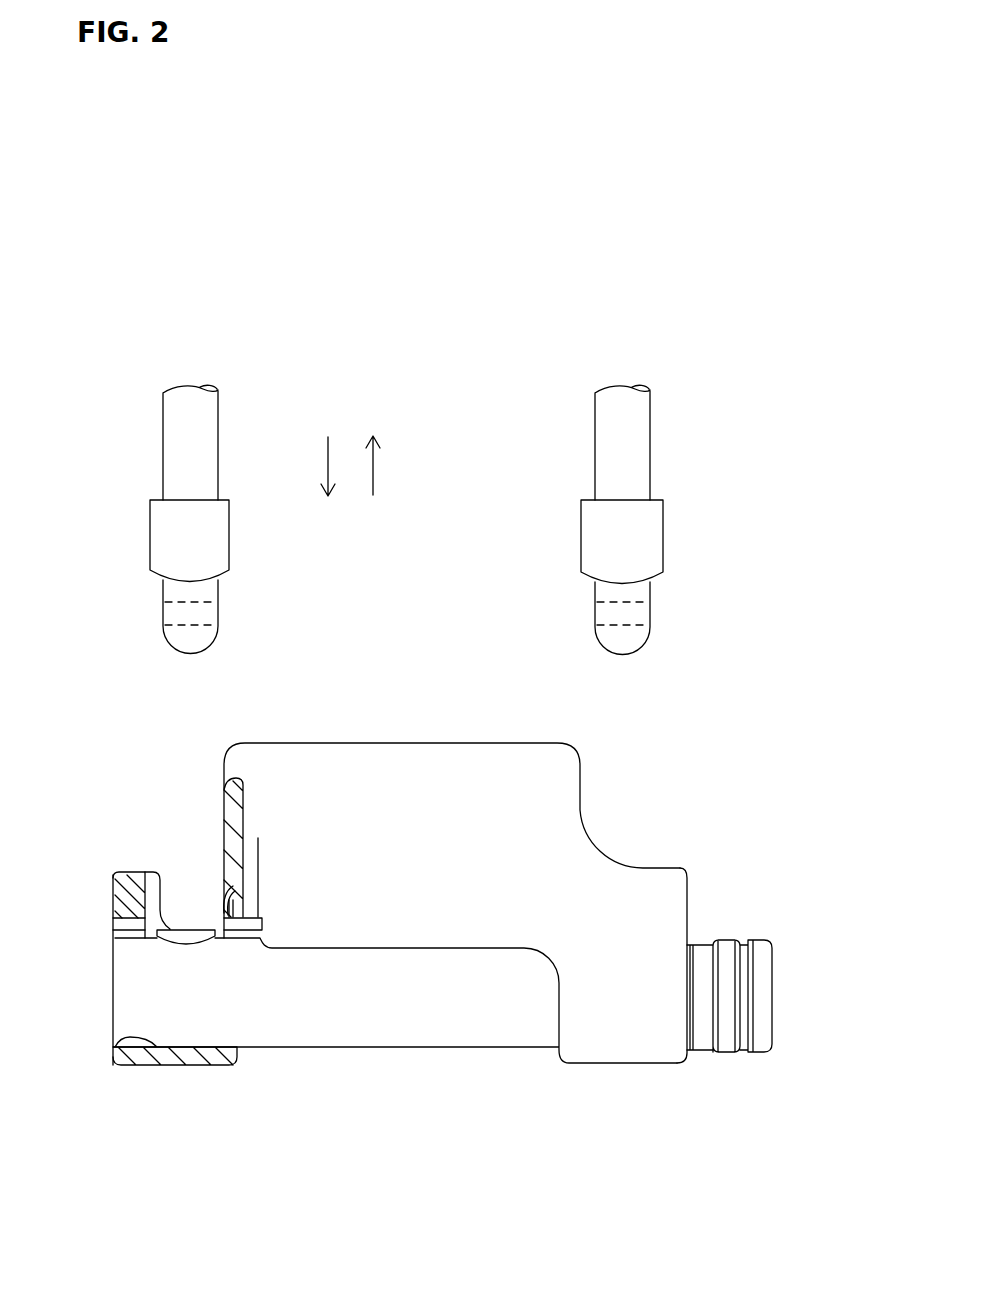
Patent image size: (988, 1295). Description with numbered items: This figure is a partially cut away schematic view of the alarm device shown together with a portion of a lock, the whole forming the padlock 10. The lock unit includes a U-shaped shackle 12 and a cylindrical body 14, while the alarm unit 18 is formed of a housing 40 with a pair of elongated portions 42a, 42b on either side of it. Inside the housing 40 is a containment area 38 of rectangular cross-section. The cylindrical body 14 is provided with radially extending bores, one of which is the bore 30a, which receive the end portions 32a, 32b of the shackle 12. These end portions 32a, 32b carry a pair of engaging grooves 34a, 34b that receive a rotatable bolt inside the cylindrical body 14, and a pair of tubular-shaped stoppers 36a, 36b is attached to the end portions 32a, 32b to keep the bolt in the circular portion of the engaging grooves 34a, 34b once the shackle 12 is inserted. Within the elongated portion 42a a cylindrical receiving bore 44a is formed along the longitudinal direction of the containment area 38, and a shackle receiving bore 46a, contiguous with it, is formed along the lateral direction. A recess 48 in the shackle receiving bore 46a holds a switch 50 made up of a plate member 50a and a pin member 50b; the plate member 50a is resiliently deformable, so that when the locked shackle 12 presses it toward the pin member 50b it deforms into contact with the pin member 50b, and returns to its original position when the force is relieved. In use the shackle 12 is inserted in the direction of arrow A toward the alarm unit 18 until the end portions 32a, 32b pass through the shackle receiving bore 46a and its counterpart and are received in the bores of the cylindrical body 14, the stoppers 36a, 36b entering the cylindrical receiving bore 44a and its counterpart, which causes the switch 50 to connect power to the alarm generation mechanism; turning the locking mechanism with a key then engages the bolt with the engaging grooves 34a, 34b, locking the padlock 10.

The padlock 10 is at (674, 185).
The shackle 12 is at (659, 438).
The cylindrical body 14 is at (503, 1058).
The alarm unit 18 is at (433, 738).
The bore 30a is at (115, 900).
The end portion 32a is at (162, 595).
The end portion 32b is at (650, 595).
The engaging groove 34a is at (180, 623).
The engaging groove 34b is at (628, 620).
The stopper 36a is at (150, 540).
The stopper 36b is at (663, 541).
The containment area 38 is at (259, 861).
The housing 40 is at (360, 742).
The elongated portion 42a is at (115, 888).
The elongated portion 42b is at (687, 902).
The cylindrical receiving bore 44a is at (113, 1040).
The shackle receiving bore 46a is at (162, 870).
The recess 48 is at (205, 979).
The switch 50 is at (294, 1040).
The plate member 50a is at (228, 918).
The pin member 50b is at (233, 912).